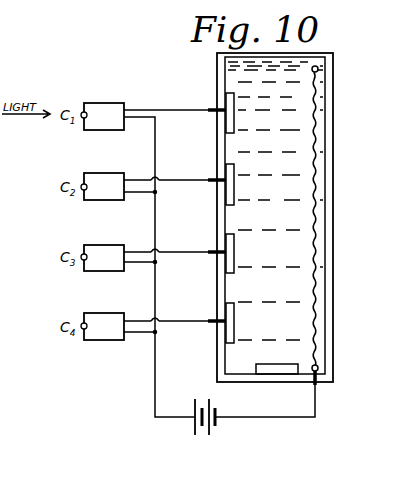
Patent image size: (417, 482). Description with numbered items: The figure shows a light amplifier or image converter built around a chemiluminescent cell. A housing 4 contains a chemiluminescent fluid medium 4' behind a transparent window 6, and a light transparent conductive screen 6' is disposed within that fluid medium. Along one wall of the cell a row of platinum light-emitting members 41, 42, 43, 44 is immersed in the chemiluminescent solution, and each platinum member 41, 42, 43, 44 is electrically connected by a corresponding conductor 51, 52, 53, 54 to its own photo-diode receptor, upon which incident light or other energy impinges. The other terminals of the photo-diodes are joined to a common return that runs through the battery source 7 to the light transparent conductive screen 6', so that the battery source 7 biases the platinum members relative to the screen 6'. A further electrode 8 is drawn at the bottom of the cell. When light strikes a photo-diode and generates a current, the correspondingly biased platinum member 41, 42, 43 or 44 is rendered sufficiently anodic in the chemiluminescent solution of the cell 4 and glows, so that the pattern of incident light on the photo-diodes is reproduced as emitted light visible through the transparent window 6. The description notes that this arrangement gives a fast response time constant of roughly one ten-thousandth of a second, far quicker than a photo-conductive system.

The housing 4 is at (281, 391).
The chemiluminescent fluid medium 4' is at (335, 79).
The transparent window 6 is at (290, 217).
The light transparent conductive screen 6' is at (337, 220).
The battery source 7 is at (208, 428).
The bottom electrode 8 is at (276, 370).
The platinum light-emitting member 41 is at (226, 120).
The platinum light-emitting member 42 is at (226, 190).
The platinum light-emitting member 43 is at (226, 260).
The platinum light-emitting member 44 is at (230, 345).
The conductor 51 is at (180, 109).
The conductor 52 is at (174, 179).
The conductor 53 is at (178, 251).
The conductor 54 is at (172, 320).